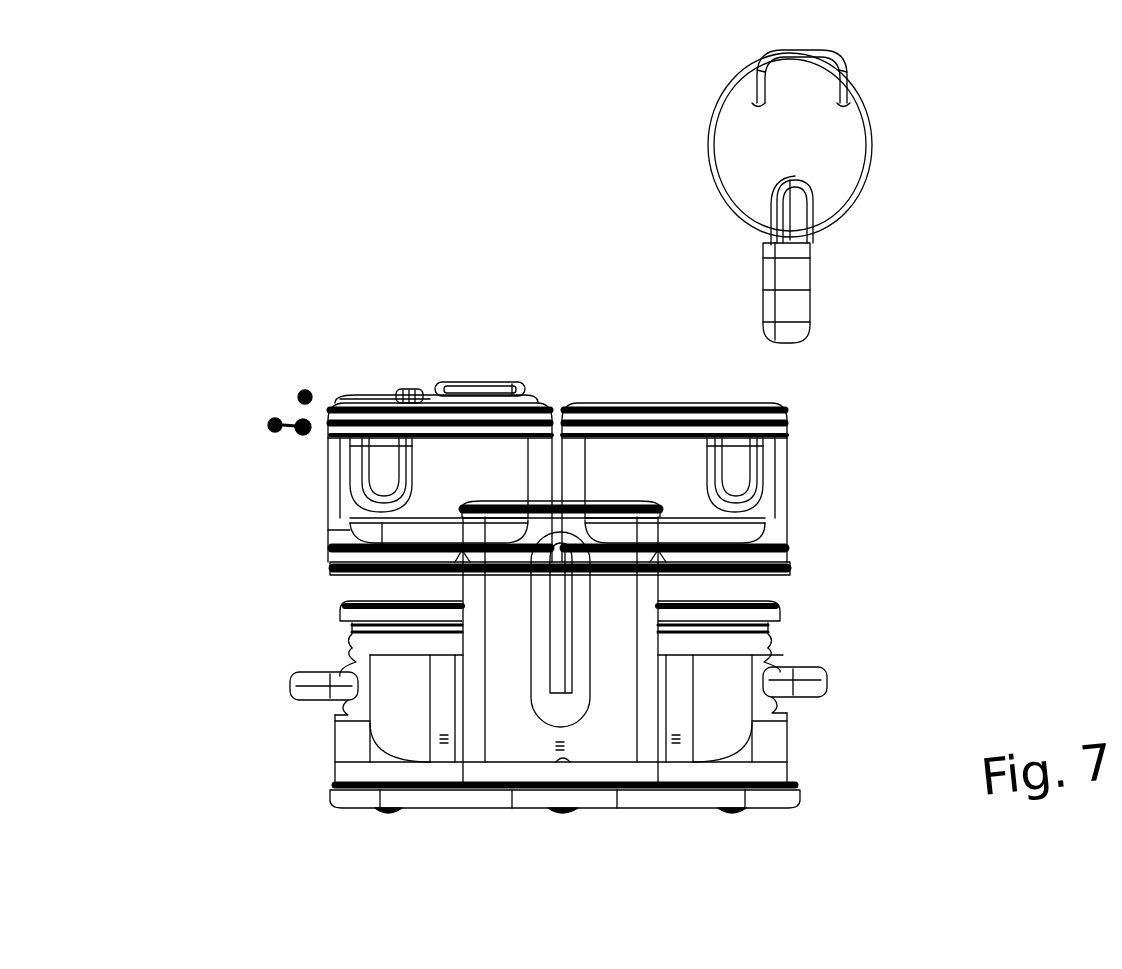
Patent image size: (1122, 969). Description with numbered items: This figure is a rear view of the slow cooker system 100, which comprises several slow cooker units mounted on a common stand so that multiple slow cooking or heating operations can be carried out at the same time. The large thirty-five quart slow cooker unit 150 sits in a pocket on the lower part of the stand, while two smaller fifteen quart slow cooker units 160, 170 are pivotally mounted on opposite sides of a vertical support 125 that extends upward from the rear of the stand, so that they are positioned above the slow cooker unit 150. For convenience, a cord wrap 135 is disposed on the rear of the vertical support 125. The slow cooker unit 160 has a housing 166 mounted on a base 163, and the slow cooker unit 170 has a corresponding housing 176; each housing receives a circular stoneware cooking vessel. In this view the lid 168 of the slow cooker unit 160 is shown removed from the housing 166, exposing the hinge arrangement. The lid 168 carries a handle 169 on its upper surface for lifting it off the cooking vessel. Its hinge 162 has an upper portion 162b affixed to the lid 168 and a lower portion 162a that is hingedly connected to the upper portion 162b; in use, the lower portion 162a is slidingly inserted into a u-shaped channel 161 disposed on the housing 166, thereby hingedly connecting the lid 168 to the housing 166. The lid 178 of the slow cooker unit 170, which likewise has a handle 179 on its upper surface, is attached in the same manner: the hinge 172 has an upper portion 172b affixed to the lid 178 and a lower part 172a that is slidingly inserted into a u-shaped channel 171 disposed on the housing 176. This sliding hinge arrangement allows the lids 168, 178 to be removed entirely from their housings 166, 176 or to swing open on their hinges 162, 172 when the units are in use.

The slow cooker system 100 is at (140, 82).
The vertical support 125 is at (513, 738).
The cord wrap 135 is at (585, 665).
The slow cooker unit 150 is at (335, 746).
The slow cooker unit 160 is at (790, 493).
The u-shaped channel 161 is at (765, 460).
The base 163 is at (780, 563).
The housing 166 is at (770, 483).
The lid 168 is at (837, 170).
The handle 169 is at (845, 60).
The hinge 162 is at (818, 217).
The lower portion of the hinge 162a is at (795, 330).
The upper portion of the hinge 162b is at (778, 213).
The slow cooker unit 170 is at (330, 500).
The u-shaped channel 171 is at (342, 463).
The hinge 172 is at (362, 400).
The lower part of the hinge 172a is at (330, 423).
The upper portion of the hinge 172b is at (403, 393).
The housing 176 is at (333, 527).
The lid 178 is at (432, 396).
The handle 179 is at (497, 383).